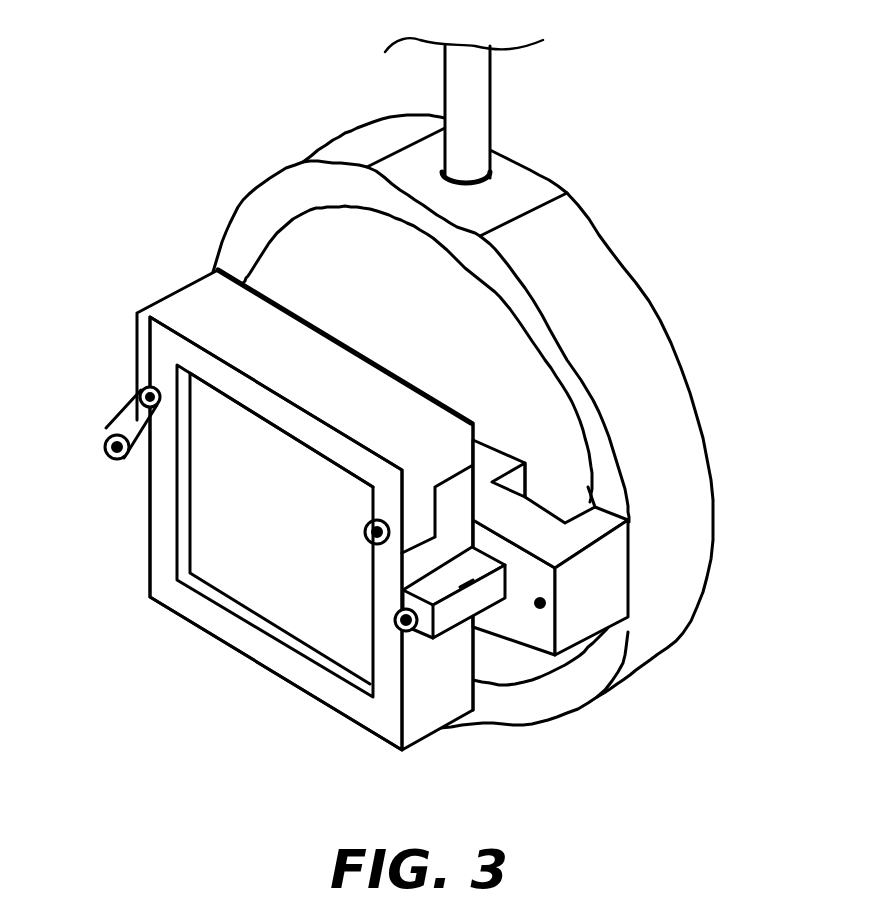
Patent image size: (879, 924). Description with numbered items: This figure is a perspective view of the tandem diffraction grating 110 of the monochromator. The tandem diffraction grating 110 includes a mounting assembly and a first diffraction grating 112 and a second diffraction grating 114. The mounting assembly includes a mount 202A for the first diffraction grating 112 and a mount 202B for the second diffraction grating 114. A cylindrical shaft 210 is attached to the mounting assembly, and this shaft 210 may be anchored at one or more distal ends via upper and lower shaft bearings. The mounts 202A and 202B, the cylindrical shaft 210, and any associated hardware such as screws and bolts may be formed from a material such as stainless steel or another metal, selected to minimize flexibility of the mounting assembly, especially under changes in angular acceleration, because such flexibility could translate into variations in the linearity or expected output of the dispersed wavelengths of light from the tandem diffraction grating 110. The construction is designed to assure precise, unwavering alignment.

The tandem diffraction grating 110 is at (116, 141).
The first diffraction grating 112 is at (283, 270).
The second diffraction grating 114 is at (236, 582).
The mount 202A is at (691, 415).
The mount 202B is at (150, 516).
The cylindrical shaft 210 is at (456, 65).